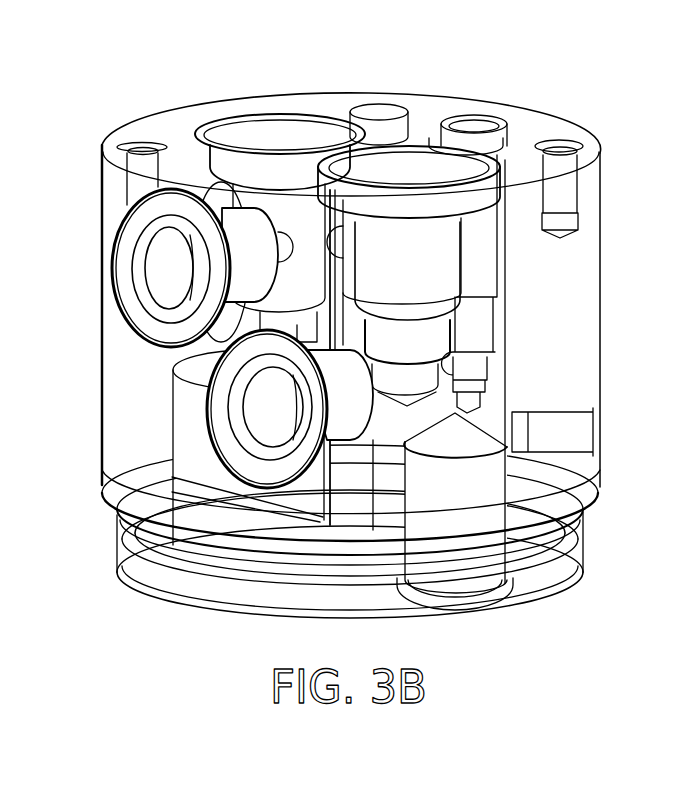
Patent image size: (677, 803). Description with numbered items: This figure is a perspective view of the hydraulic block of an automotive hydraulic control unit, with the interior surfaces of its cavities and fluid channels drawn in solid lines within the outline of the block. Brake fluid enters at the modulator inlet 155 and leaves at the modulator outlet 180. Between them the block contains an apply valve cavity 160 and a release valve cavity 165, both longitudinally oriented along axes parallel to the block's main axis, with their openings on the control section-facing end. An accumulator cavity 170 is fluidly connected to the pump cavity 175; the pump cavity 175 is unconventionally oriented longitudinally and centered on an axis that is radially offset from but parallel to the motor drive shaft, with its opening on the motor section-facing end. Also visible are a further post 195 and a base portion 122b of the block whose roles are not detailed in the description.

The release valve cavity 165 is at (272, 132).
The apply valve cavity 160 is at (428, 162).
The vent post 195 is at (480, 123).
The modulator outlet 180 is at (163, 265).
The modulator inlet 155 is at (262, 397).
The accumulator cavity 170 is at (190, 438).
The pump cavity 175 is at (390, 487).
The base ring 122b is at (580, 535).